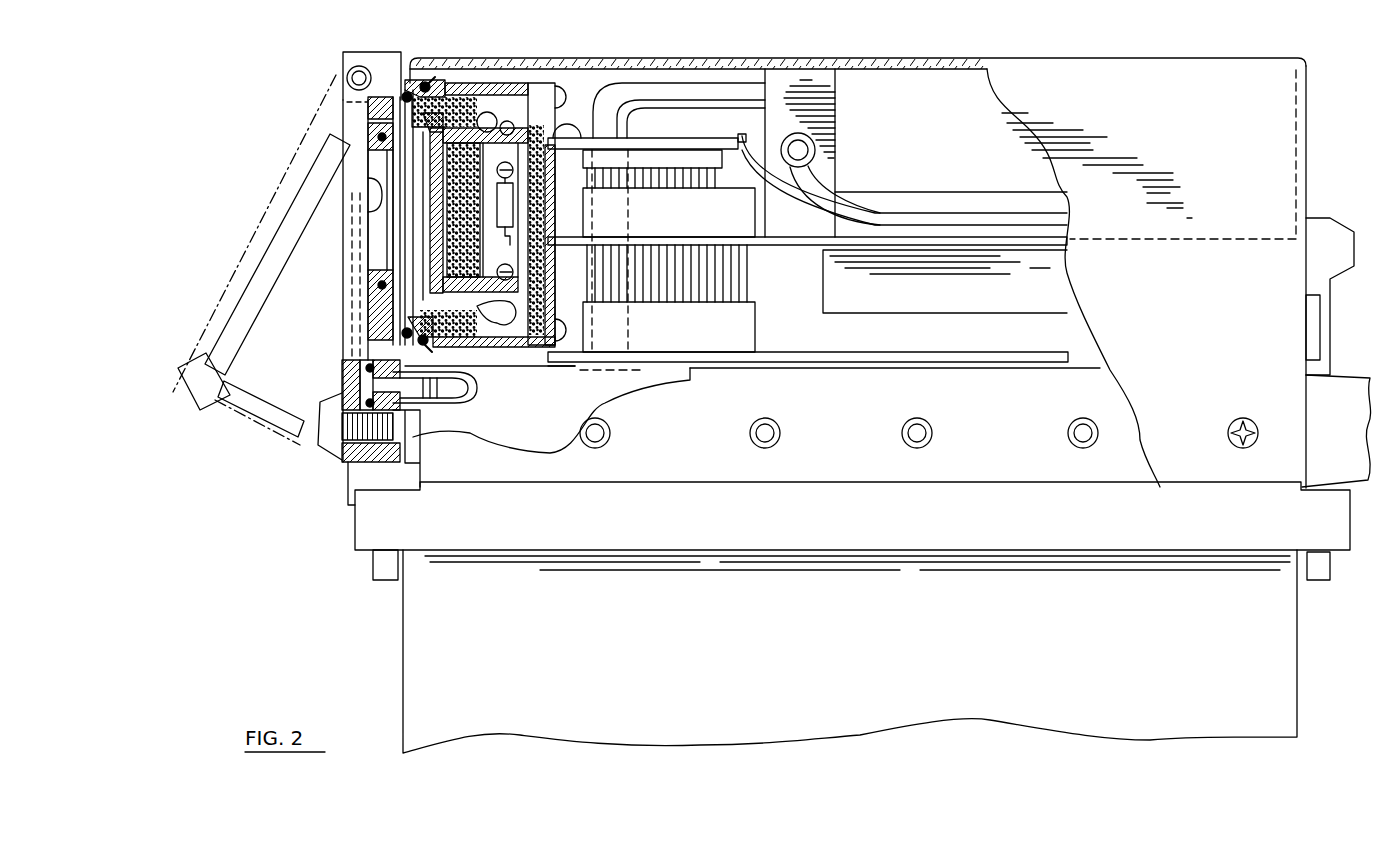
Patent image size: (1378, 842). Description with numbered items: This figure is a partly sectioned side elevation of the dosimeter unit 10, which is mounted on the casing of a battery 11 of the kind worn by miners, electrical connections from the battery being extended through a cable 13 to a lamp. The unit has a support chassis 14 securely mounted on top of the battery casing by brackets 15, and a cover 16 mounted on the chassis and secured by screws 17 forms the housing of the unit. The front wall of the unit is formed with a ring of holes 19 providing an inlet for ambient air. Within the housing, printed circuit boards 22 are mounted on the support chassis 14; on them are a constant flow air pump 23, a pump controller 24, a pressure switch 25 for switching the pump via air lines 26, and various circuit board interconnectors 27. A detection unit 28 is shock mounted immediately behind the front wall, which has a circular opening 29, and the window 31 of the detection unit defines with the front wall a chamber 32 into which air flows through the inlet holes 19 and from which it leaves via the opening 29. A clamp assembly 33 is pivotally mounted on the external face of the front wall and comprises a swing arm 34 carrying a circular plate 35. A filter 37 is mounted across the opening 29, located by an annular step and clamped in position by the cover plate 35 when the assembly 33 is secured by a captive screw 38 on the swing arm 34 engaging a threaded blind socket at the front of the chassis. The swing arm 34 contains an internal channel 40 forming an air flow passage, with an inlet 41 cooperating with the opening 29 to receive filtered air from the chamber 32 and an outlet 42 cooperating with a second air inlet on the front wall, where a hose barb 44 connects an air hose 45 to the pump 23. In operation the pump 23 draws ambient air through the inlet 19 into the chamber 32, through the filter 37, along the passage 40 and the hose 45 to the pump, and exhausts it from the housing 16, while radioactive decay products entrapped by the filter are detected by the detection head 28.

The dosimeter unit 10 is at (736, 47).
The battery 11 is at (1283, 662).
The cable 13 is at (1350, 380).
The support chassis 14 is at (830, 468).
The brackets 15 is at (385, 572).
The cover 16 is at (1137, 90).
The screws 17 is at (1237, 418).
The ring of holes 19 is at (355, 108).
The printed circuit boards 22 is at (779, 248).
The constant flow air pump 23 is at (916, 85).
The pump controller 24 is at (935, 292).
The pressure switch 25 is at (804, 82).
The air lines 26 is at (912, 213).
The circuit board interconnectors 27 is at (695, 160).
The detection unit 28 is at (541, 79).
The circular opening 29 is at (393, 220).
The window 31 is at (407, 233).
The chamber 32 is at (398, 167).
The clamp assembly 33 is at (335, 340).
The swing arm 34 is at (355, 366).
The circular plate 35 is at (378, 140).
The filter 37 is at (367, 273).
The captive screw 38 is at (336, 438).
The internal channel 40 is at (347, 296).
The inlet 41 is at (373, 187).
The outlet 42 is at (342, 400).
The hose barb 44 is at (437, 387).
The air hose 45 is at (681, 92).